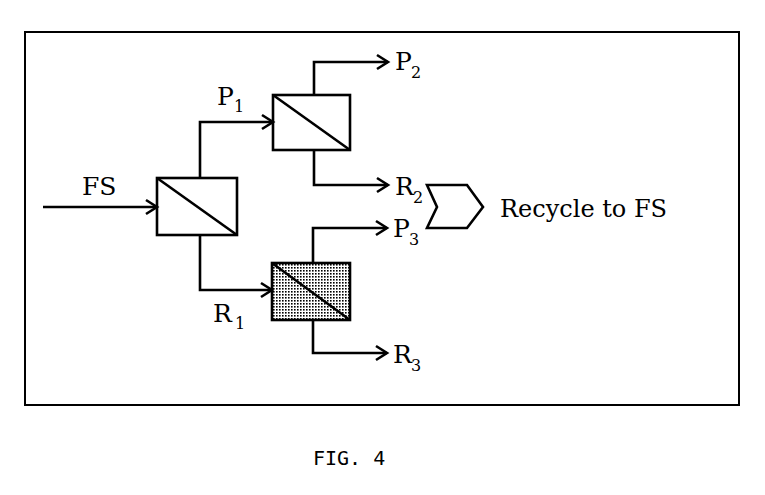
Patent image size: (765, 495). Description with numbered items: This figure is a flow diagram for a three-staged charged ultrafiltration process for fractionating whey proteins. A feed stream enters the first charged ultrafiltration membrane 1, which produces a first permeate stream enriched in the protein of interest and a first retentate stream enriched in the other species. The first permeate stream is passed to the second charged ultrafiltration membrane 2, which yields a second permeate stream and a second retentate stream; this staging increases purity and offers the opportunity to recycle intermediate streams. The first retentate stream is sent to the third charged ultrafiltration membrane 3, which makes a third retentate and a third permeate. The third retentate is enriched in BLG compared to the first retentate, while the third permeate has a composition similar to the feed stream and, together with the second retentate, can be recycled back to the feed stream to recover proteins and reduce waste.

The first charged ultrafiltration membrane 1 is at (197, 206).
The second charged ultrafiltration membrane 2 is at (311, 122).
The third charged ultrafiltration membrane 3 is at (311, 291).